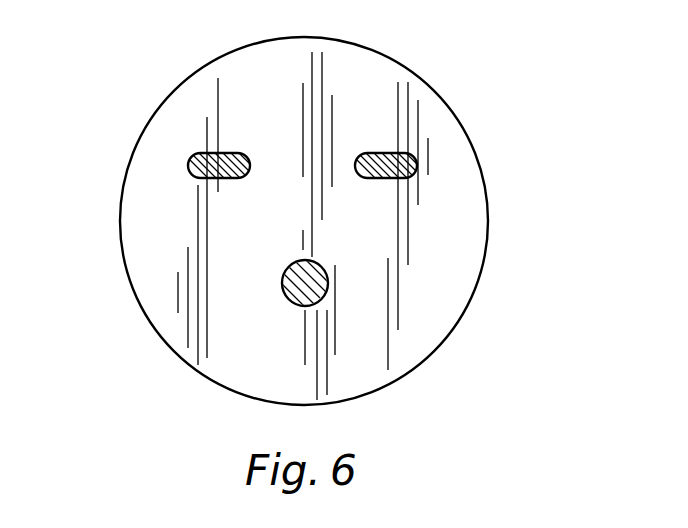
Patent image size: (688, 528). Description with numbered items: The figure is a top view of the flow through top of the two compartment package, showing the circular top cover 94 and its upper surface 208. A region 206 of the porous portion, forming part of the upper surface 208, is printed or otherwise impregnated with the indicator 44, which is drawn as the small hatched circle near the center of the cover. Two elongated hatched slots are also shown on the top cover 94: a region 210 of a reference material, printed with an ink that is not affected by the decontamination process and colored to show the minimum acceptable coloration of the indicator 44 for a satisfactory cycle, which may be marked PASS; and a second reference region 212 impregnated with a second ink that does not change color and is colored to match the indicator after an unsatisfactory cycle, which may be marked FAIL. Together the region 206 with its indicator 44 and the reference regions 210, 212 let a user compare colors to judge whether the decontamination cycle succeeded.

The top cover 94 is at (157, 88).
The upper surface 208 is at (463, 277).
The second reference region 212 is at (200, 172).
The region of reference material 210 is at (388, 157).
The region 206 is at (282, 281).
The indicator 44 is at (328, 285).